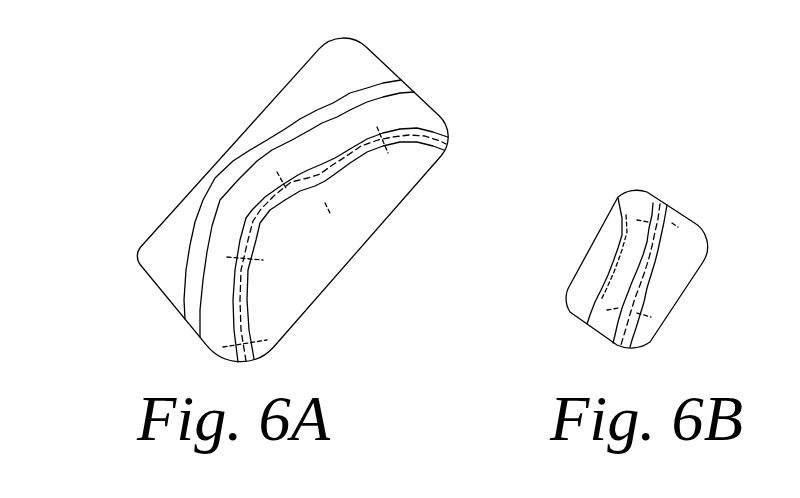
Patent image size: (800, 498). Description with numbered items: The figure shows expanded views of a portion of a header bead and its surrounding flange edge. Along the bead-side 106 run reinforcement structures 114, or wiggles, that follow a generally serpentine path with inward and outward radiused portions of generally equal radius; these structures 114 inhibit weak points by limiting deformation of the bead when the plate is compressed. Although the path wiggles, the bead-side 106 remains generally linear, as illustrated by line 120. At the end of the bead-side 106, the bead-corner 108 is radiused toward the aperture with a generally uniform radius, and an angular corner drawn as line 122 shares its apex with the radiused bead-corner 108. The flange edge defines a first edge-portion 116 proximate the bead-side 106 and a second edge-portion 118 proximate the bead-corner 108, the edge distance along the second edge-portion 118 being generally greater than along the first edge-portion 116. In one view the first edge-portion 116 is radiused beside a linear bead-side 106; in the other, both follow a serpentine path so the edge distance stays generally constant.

In FIG. 6A, the bead-side 106 is at (289, 214).
In FIG. 6B, the bead-side 106 is at (694, 272).
In FIG. 6A, the bead-corner 108 is at (248, 205).
In FIG. 6A, the reinforcement structure 114 is at (300, 115).
In FIG. 6A, the first edge-portion 116 is at (273, 300).
In FIG. 6B, the first edge-portion 116 is at (602, 292).
In FIG. 6A, the second edge-portion 118 is at (295, 257).
In FIG. 6A, the line 120 is at (343, 163).
In FIG. 6B, the line 120 is at (648, 262).
In FIG. 6A, the line 122 is at (273, 203).
In FIG. 6B, the line 122 is at (660, 213).